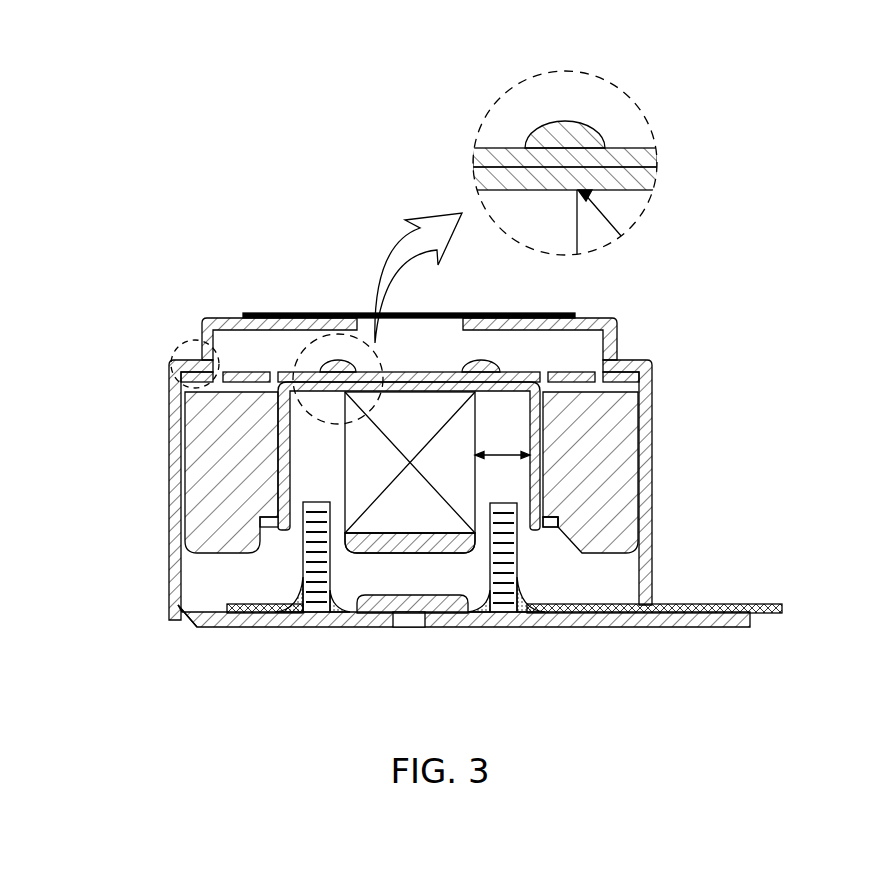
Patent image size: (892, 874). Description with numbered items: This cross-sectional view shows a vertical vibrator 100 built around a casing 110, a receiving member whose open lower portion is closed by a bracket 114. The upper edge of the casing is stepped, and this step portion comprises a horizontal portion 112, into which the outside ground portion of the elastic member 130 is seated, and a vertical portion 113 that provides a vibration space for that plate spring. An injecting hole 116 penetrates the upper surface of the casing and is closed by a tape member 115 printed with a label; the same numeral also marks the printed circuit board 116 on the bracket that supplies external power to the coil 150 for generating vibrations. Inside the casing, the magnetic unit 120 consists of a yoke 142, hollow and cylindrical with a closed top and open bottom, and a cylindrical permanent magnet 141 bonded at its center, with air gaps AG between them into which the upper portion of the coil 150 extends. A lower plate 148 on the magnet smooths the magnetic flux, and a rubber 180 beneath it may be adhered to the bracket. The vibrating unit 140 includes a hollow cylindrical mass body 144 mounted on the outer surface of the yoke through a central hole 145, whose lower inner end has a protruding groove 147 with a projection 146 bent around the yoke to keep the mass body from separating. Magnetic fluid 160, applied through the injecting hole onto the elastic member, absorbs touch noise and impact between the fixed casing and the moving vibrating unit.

The vertical vibrator 100 is at (352, 185).
The casing 110 is at (645, 407).
The horizontal portion 112 is at (177, 377).
The vertical portion 113 is at (203, 352).
The bracket 114 is at (100, 332).
The tape member 115 is at (340, 316).
The injecting hole 116 is at (463, 323).
The magnetic unit 120 is at (566, 355).
The elastic member 130 is at (237, 368).
The vibrating unit 140 is at (212, 563).
The magnet 141 is at (437, 518).
The yoke 142 is at (537, 468).
The mass body 144 is at (195, 508).
The central hole 145 is at (275, 468).
The projection 146 is at (193, 608).
The protruding groove 147 is at (547, 530).
The lower plate 148 is at (385, 548).
The coil for generating vibrations 150 is at (320, 603).
The magnetic fluid 160 is at (297, 368).
The rubber 180 is at (442, 607).